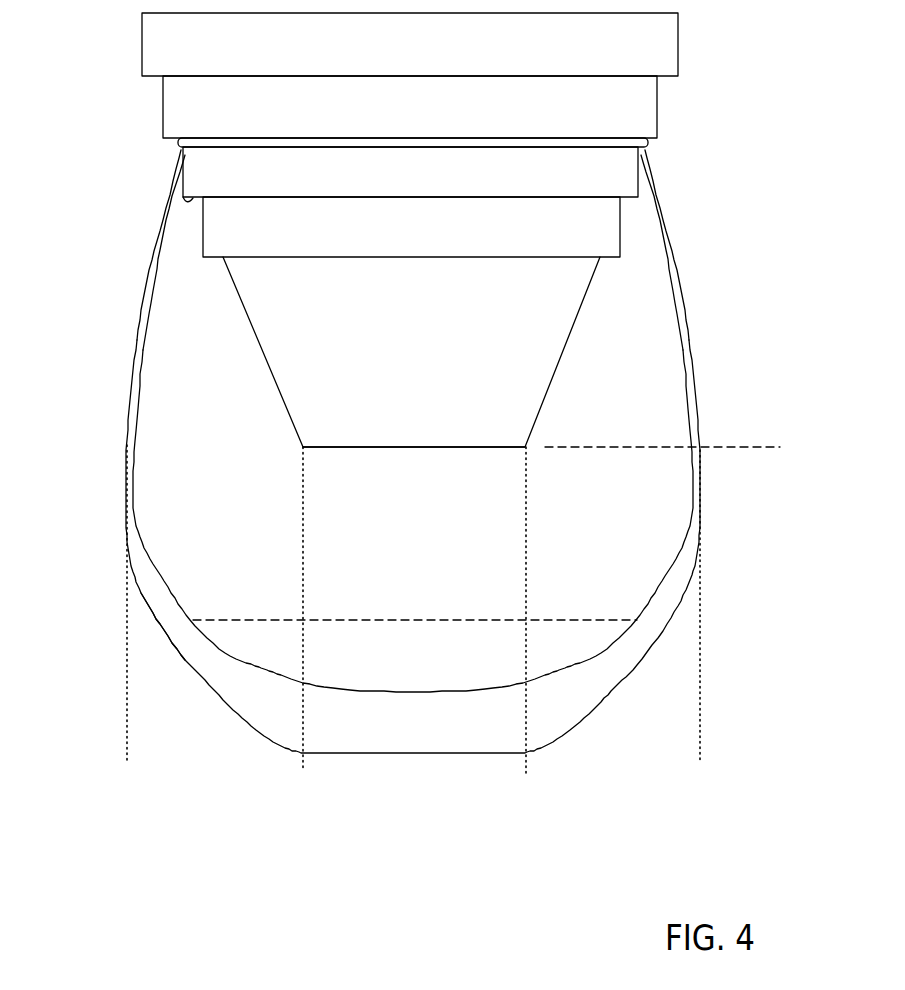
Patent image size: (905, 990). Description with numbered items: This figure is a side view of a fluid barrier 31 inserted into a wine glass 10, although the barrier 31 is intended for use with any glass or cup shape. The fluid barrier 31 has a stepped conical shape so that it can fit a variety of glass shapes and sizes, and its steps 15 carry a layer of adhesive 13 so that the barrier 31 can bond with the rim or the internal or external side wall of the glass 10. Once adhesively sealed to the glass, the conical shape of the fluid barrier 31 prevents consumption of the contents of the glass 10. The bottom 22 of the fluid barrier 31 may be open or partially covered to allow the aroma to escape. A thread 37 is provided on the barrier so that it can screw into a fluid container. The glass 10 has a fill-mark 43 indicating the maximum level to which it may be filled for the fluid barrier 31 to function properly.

The wine glass 10 is at (700, 497).
The layer of adhesive 13 is at (205, 262).
The steps 15 is at (657, 100).
The bottom 22 is at (427, 451).
The fluid barrier 31 is at (428, 338).
The thread 37 is at (645, 162).
The fill-mark 43 is at (162, 625).